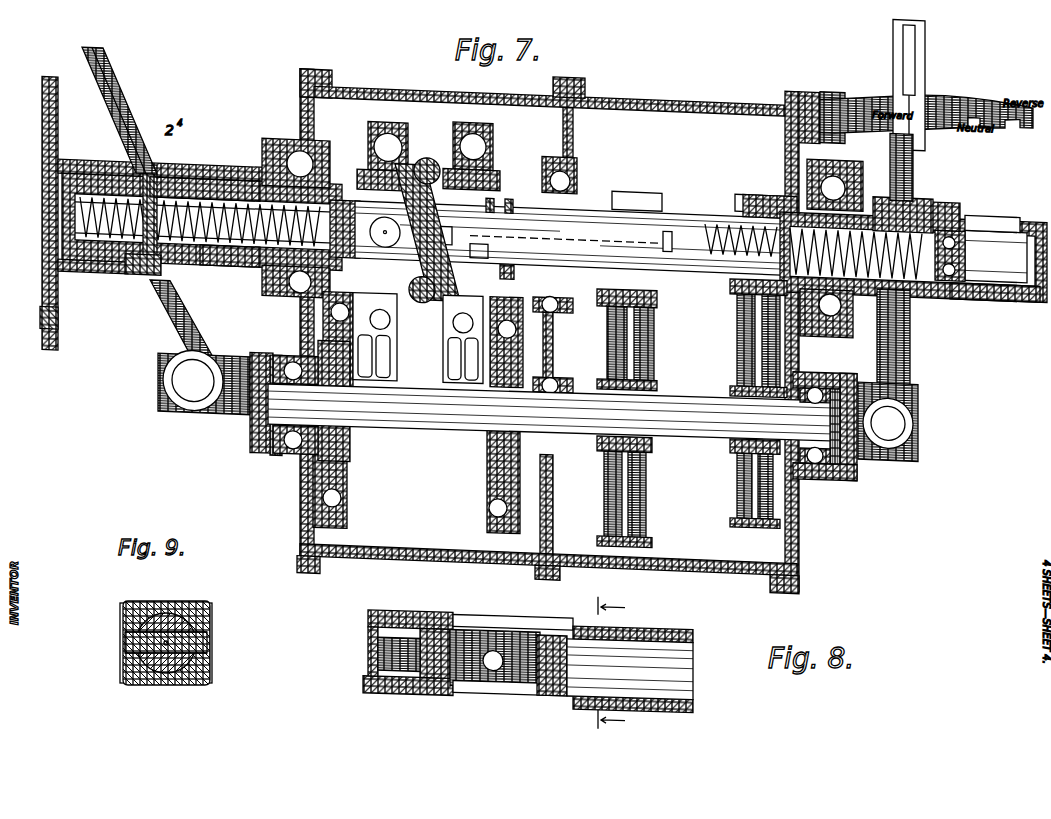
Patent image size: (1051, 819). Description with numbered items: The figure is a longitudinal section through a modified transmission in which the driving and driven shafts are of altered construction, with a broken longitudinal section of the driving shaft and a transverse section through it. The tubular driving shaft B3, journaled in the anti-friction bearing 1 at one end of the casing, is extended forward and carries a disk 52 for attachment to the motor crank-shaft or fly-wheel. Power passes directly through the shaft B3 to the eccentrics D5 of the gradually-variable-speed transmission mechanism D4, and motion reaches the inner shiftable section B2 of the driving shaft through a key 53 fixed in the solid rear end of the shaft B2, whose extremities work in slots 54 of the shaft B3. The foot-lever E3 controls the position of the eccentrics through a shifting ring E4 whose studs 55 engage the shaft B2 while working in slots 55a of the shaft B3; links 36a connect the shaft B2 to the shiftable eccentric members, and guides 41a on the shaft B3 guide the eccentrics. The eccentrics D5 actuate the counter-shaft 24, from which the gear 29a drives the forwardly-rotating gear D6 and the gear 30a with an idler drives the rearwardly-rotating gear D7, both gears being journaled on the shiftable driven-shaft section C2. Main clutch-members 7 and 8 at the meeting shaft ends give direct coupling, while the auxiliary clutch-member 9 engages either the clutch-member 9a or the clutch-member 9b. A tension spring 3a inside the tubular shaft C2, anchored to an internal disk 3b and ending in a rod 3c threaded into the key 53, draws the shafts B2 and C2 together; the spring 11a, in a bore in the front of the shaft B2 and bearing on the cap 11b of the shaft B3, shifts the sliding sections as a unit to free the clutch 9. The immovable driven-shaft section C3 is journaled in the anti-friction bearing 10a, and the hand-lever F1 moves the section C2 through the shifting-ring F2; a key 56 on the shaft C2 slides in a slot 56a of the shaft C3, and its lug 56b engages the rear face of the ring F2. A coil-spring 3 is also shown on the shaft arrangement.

In FIG. 7, the anti-friction bearing 1 is at (318, 146).
In FIG. 7, the coil-spring 3 is at (600, 239).
In FIG. 7, the tension spring 3a is at (985, 291).
In FIG. 7, the internal disk 3b is at (995, 256).
In FIG. 7, the extension rod 3c is at (477, 250).
In FIG. 8, the extension rod 3c is at (700, 664).
In FIG. 7, the main clutch-member 7 is at (491, 200).
In FIG. 7, the main clutch-member 8 is at (510, 200).
In FIG. 7, the auxiliary clutch-member 9 is at (668, 226).
In FIG. 8, the auxiliary clutch-member 9 is at (607, 663).
In FIG. 7, the clutch-member 9a is at (688, 186).
In FIG. 7, the clutch-member 9b is at (740, 186).
In FIG. 7, the anti-friction bearing 10a is at (840, 173).
In FIG. 7, the spring 11a is at (222, 262).
In FIG. 7, the cap or plug 11b is at (56, 194).
In FIG. 7, the counter-shaft 24 is at (553, 410).
In FIG. 7, the gear 29a is at (656, 355).
In FIG. 7, the gear 30a is at (736, 371).
In FIG. 7, the links 36a is at (406, 176).
In FIG. 9, the guides 41a is at (210, 610).
In FIG. 7, the disk 52 is at (58, 290).
In FIG. 8, the key 53 is at (536, 683).
In FIG. 9, the key 53 is at (212, 638).
In FIG. 7, the slots 54 is at (509, 270).
In FIG. 8, the slots 54 is at (530, 622).
In FIG. 9, the slots 54 is at (122, 616).
In FIG. 7, the studs 55 is at (165, 185).
In FIG. 7, the slots 55a is at (224, 181).
In FIG. 7, the key 56 is at (941, 216).
In FIG. 7, the slot 56a is at (992, 212).
In FIG. 7, the lug or shoulder 56b is at (950, 192).
In FIG. 7, the inner shiftable section of the driving shaft B2 is at (190, 197).
In FIG. 8, the inner shiftable section of the driving shaft B2 is at (440, 626).
In FIG. 9, the inner shiftable section of the driving shaft B2 is at (137, 603).
In FIG. 7, the tubular driving shaft B3 is at (250, 184).
In FIG. 8, the tubular driving shaft B3 is at (665, 621).
In FIG. 9, the tubular driving shaft B3 is at (185, 602).
In FIG. 7, the shiftable section of the driven shaft C2 is at (714, 200).
In FIG. 7, the immovable section of the driven shaft C3 is at (1022, 220).
In FIG. 7, the gradually-variable-speed transmission mechanism D4 is at (443, 412).
In FIG. 7, the eccentrics D5 is at (366, 172).
In FIG. 7, the forwardly-rotating gear D6 is at (622, 190).
In FIG. 7, the rearwardly-rotating gear D7 is at (771, 188).
In FIG. 7, the foot-lever E3 is at (118, 95).
In FIG. 7, the shifting ring E4 is at (140, 283).
In FIG. 7, the hand-lever F1 is at (928, 52).
In FIG. 7, the shifting-ring F2 is at (926, 206).